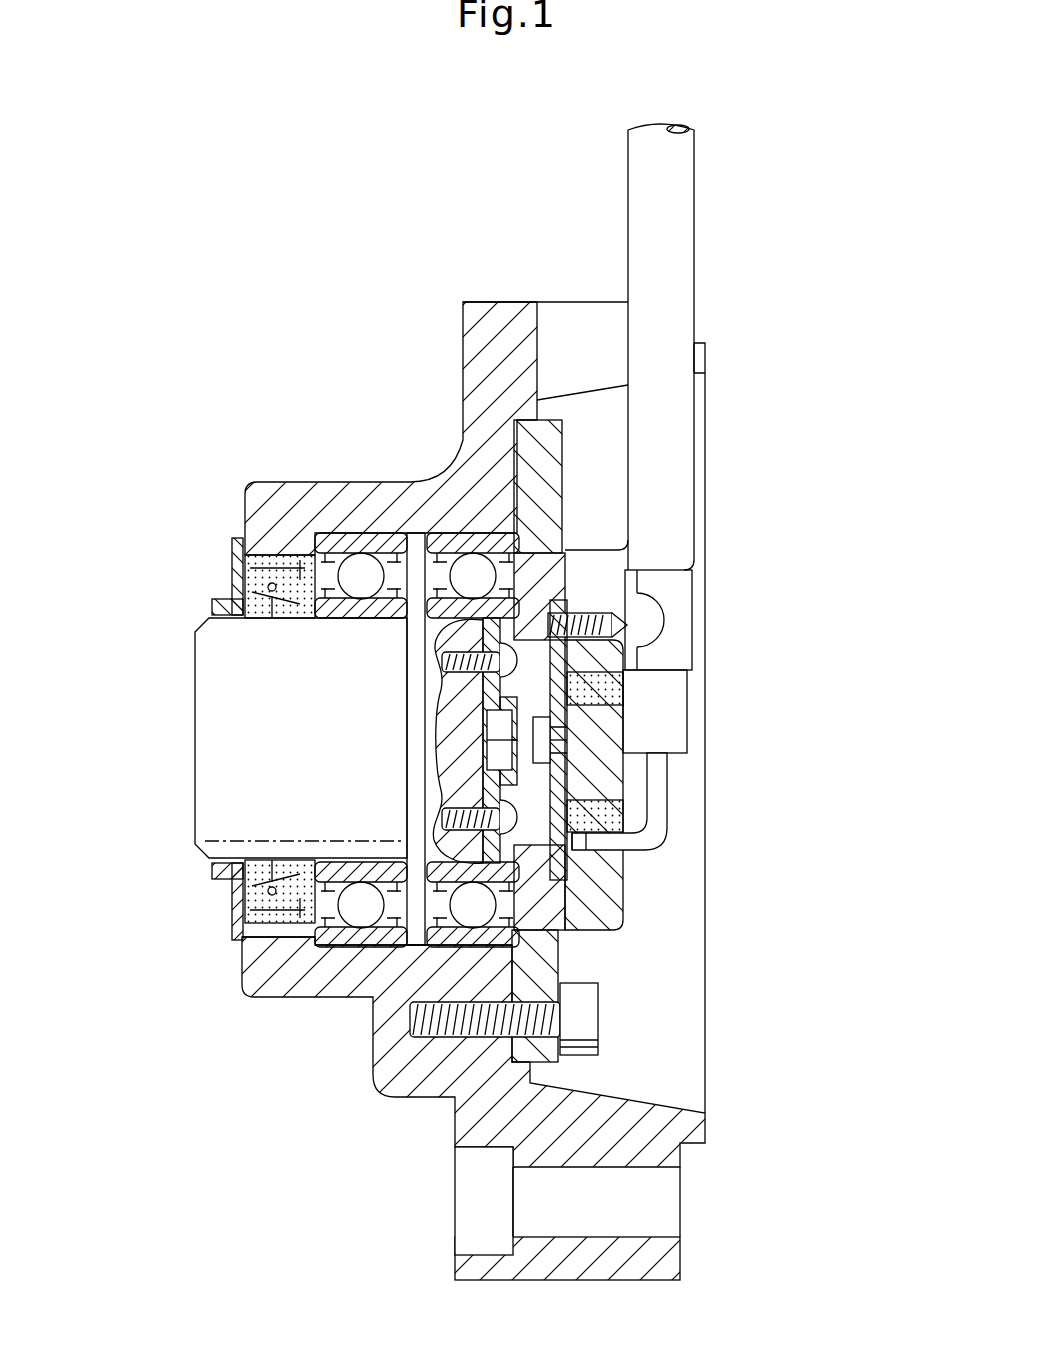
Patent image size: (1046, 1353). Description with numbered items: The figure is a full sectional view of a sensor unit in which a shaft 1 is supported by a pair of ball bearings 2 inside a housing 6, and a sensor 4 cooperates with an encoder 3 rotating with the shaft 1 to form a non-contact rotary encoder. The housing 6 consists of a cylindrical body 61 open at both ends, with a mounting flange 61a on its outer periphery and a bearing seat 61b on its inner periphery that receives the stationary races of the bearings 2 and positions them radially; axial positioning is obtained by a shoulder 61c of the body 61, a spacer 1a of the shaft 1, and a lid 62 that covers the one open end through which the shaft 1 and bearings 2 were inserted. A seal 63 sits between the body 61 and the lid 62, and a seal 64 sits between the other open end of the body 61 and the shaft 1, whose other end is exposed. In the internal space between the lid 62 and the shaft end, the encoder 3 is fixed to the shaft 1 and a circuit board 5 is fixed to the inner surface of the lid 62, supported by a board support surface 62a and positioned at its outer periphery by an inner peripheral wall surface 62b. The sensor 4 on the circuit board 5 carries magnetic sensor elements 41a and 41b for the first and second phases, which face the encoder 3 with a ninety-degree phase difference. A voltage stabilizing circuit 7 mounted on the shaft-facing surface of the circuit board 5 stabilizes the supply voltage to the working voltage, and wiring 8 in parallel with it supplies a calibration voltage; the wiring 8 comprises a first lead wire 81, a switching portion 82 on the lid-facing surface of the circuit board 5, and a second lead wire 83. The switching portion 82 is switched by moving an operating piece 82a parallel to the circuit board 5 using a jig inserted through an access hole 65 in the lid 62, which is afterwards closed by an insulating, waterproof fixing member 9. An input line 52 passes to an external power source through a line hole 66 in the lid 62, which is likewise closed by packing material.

The shaft 1 is at (220, 690).
The spacer 1a is at (417, 815).
The bearings 2 is at (403, 545).
The encoder 3 is at (480, 797).
The sensor 4 is at (497, 755).
The magnetic sensor element 41a is at (517, 720).
The magnetic sensor element 41b is at (517, 750).
The circuit board 5 is at (558, 780).
The input line 52 is at (690, 830).
The housing 6 is at (456, 329).
The cylindrical body 61 is at (473, 470).
The mounting flange 61a is at (503, 312).
The bearing seat 61b is at (370, 947).
The shoulder 61c is at (290, 945).
The lid 62 is at (540, 962).
The board support surface 62a is at (625, 880).
The inner peripheral wall surface 62b is at (623, 900).
The seal 63 is at (485, 1033).
The seal 64 is at (277, 560).
The access hole 65 is at (632, 660).
The line hole 66 is at (625, 855).
The voltage stabilizing circuit 7 is at (565, 545).
The wiring 8 is at (805, 643).
The first lead wire 81 is at (600, 688).
The switching portion 82 is at (620, 733).
The operating piece 82a is at (620, 700).
The second lead wire 83 is at (600, 762).
The fixing member 9 is at (662, 600).